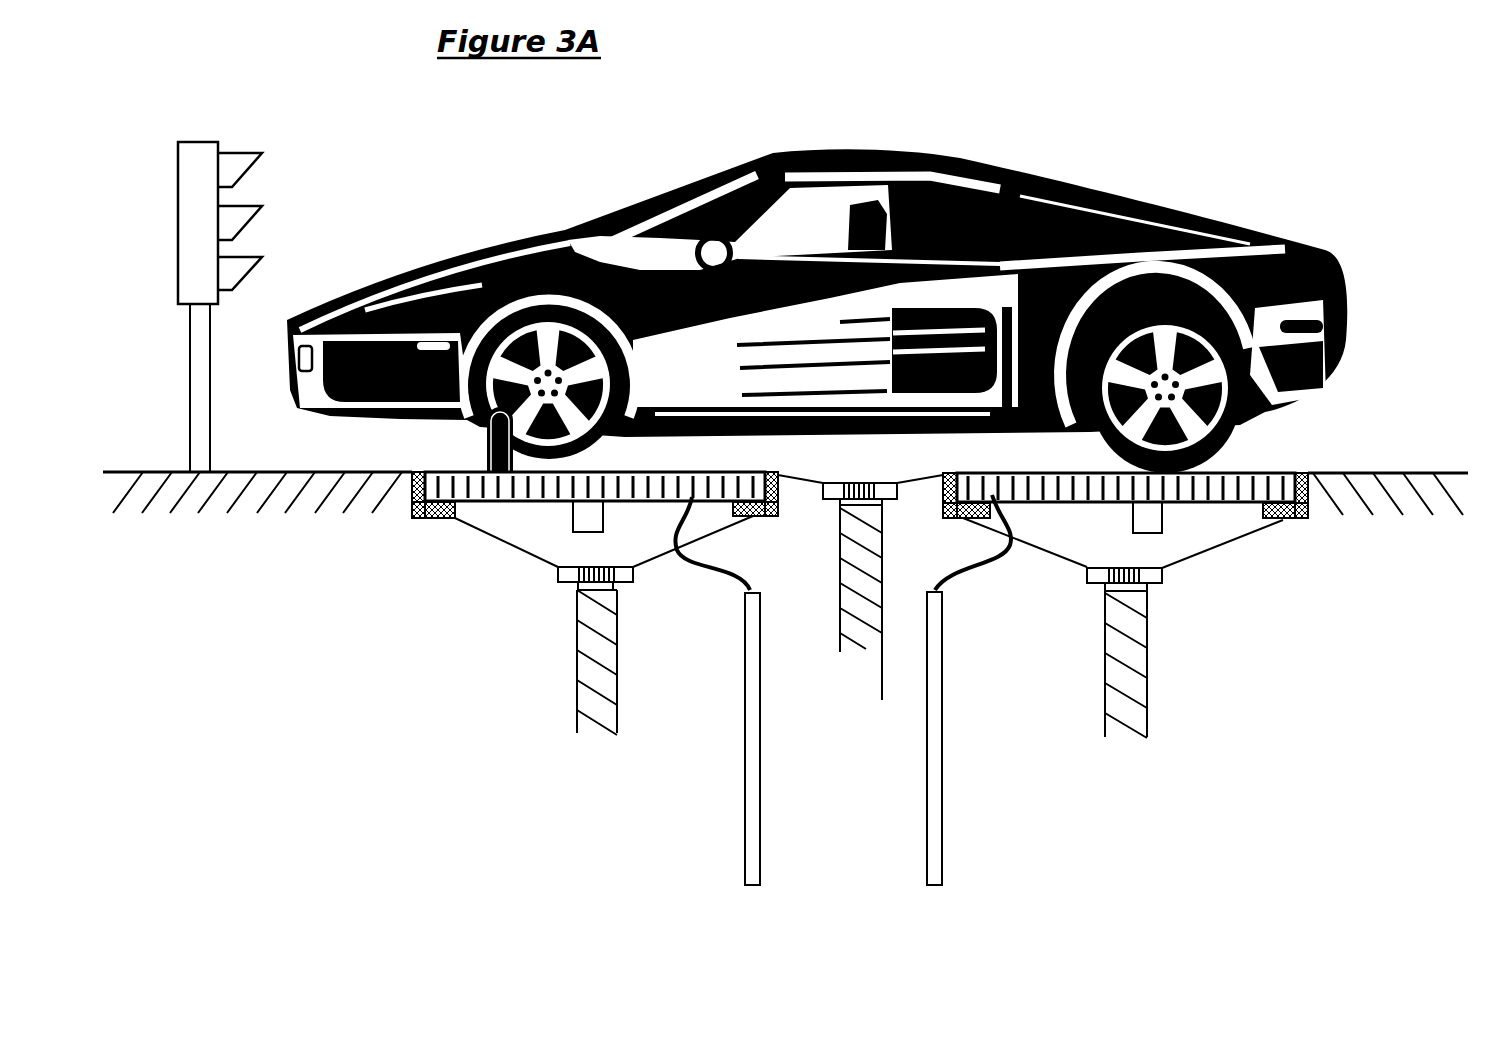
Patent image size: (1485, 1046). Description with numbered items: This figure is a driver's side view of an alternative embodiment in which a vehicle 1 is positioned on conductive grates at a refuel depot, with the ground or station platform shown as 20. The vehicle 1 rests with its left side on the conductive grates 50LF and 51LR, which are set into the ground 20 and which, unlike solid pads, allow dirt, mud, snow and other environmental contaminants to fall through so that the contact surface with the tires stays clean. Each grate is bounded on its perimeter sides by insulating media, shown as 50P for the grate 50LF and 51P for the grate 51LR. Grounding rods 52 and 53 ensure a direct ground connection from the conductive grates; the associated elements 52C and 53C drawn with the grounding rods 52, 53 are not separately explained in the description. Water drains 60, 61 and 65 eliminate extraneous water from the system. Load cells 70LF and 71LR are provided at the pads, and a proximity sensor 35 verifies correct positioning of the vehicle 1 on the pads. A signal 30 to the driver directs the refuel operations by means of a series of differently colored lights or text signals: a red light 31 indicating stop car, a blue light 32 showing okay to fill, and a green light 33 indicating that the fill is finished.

The vehicle 1 is at (1078, 181).
The ground or station platform 20 is at (233, 507).
The signal 30 is at (200, 141).
The red light 31 is at (245, 177).
The blue light 32 is at (243, 223).
The green light 33 is at (243, 273).
The proximity sensor 35 is at (487, 451).
The insulating media 50P is at (412, 518).
The conductive grate 50LF is at (494, 502).
The insulating media 51P is at (1308, 518).
The conductive grate 51LR is at (1206, 505).
The grounding rod 52 is at (752, 740).
The left front sensor cable 52C is at (717, 550).
The grounding rod 53 is at (933, 737).
The left rear sensor cable 53C is at (968, 568).
The water drain 60 is at (612, 695).
The water drain 61 is at (1145, 697).
The water drain 65 is at (860, 605).
The load cell 70LF is at (587, 517).
The load cell 71LR is at (1147, 518).